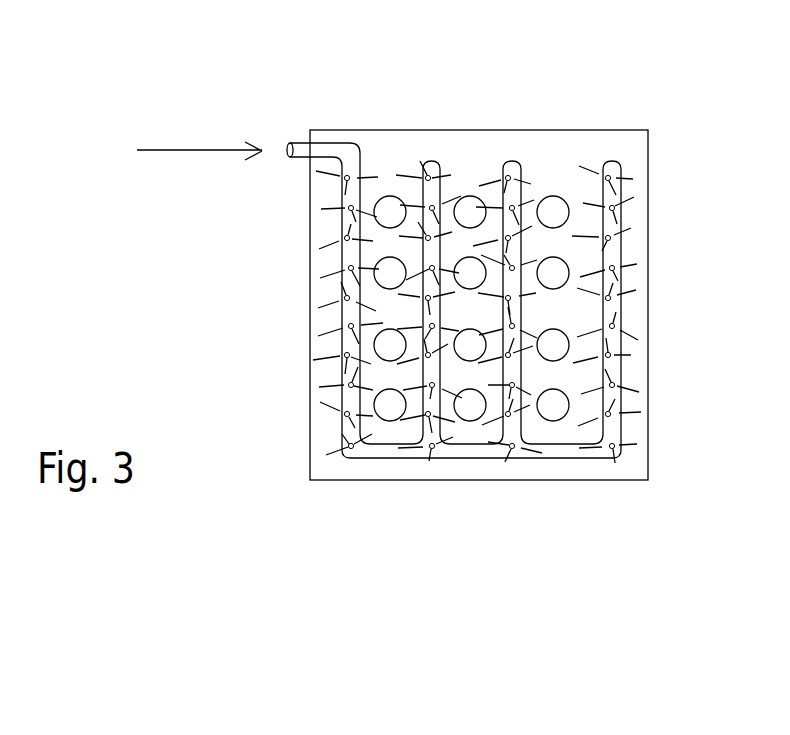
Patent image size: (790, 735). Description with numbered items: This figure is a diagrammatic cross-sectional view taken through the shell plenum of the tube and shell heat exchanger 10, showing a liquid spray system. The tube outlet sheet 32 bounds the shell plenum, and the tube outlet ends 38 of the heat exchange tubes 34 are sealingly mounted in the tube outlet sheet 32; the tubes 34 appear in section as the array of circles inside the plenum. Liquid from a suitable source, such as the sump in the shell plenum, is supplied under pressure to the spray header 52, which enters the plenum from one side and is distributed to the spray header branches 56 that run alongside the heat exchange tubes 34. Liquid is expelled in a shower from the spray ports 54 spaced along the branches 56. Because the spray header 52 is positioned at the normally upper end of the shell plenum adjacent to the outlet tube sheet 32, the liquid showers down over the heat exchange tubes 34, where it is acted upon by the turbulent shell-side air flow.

The tube and shell heat exchanger 10 is at (267, 70).
The tube outlet sheet 32 is at (592, 157).
The heat exchange tubes 34 is at (569, 273).
The tube outlet ends 38 is at (390, 210).
The spray header 52 is at (325, 152).
The spray ports 54 is at (350, 323).
The spray header branches 56 is at (505, 420).